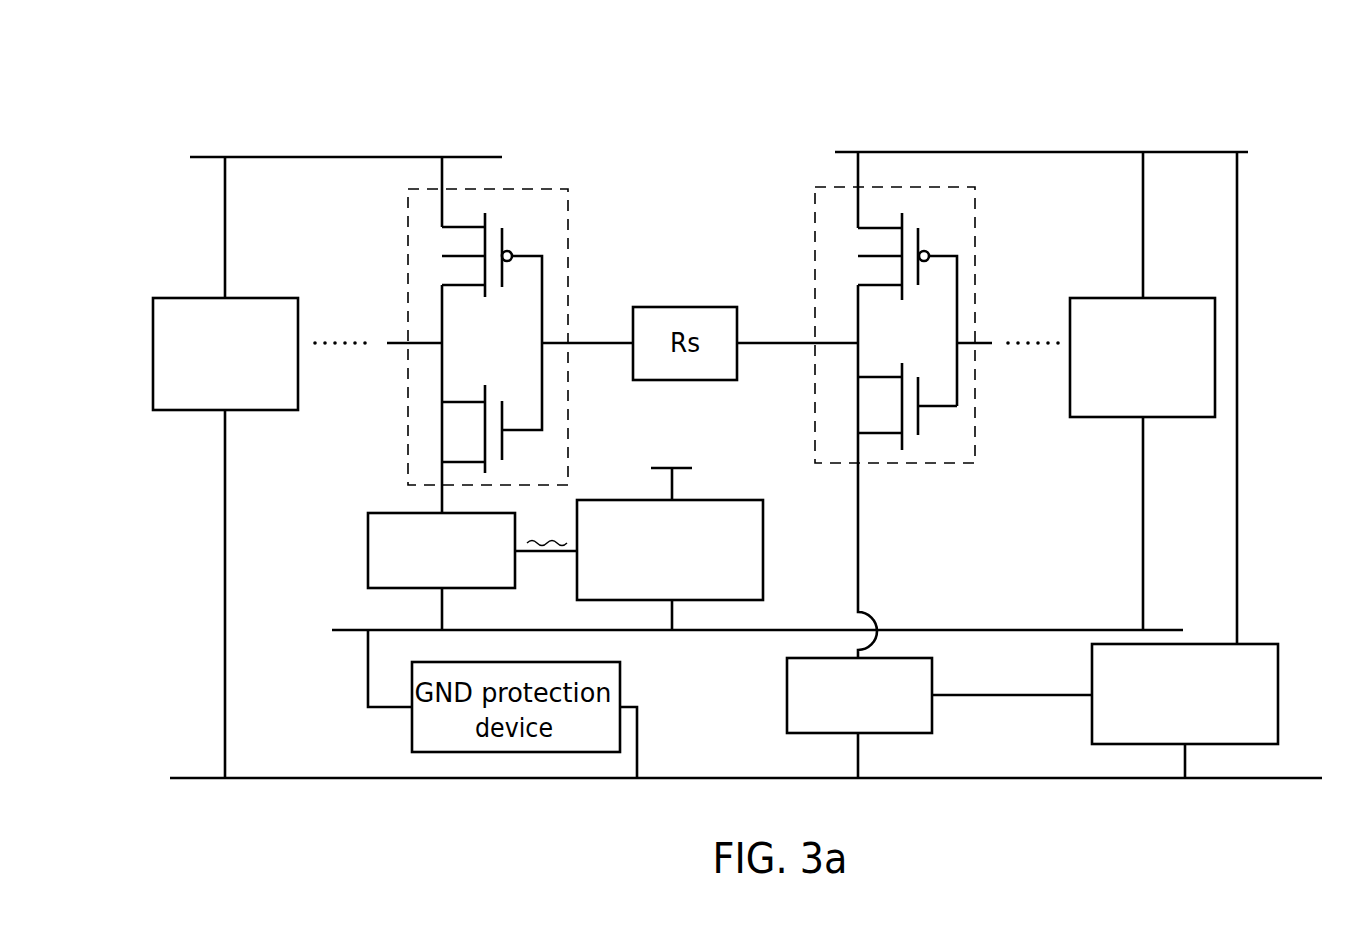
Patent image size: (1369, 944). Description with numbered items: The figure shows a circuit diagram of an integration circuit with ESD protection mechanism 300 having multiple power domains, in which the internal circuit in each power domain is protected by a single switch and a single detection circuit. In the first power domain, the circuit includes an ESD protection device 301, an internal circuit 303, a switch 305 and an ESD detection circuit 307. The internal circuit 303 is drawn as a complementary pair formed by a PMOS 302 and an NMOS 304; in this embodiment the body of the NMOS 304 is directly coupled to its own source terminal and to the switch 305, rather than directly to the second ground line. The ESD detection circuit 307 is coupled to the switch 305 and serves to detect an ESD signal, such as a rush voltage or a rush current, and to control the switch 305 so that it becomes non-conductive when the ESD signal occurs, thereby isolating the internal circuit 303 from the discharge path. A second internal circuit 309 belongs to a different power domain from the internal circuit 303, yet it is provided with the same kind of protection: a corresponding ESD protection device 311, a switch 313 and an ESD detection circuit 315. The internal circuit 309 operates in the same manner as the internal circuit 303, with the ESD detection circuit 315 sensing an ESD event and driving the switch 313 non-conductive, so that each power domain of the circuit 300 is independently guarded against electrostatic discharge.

The integration circuit with ESD protection mechanism 300 is at (1217, 128).
The ESD protection device 301 is at (153, 346).
The PMOS transistor 302 is at (458, 288).
The internal circuit 303 is at (478, 335).
The NMOS 304 is at (458, 400).
The switch 305 is at (368, 554).
The ESD detection circuit 307 is at (766, 560).
The internal circuit 309 is at (976, 238).
The ESD protection device 311 is at (1070, 402).
The switch 313 is at (786, 698).
The ESD detection circuit 315 is at (1280, 706).